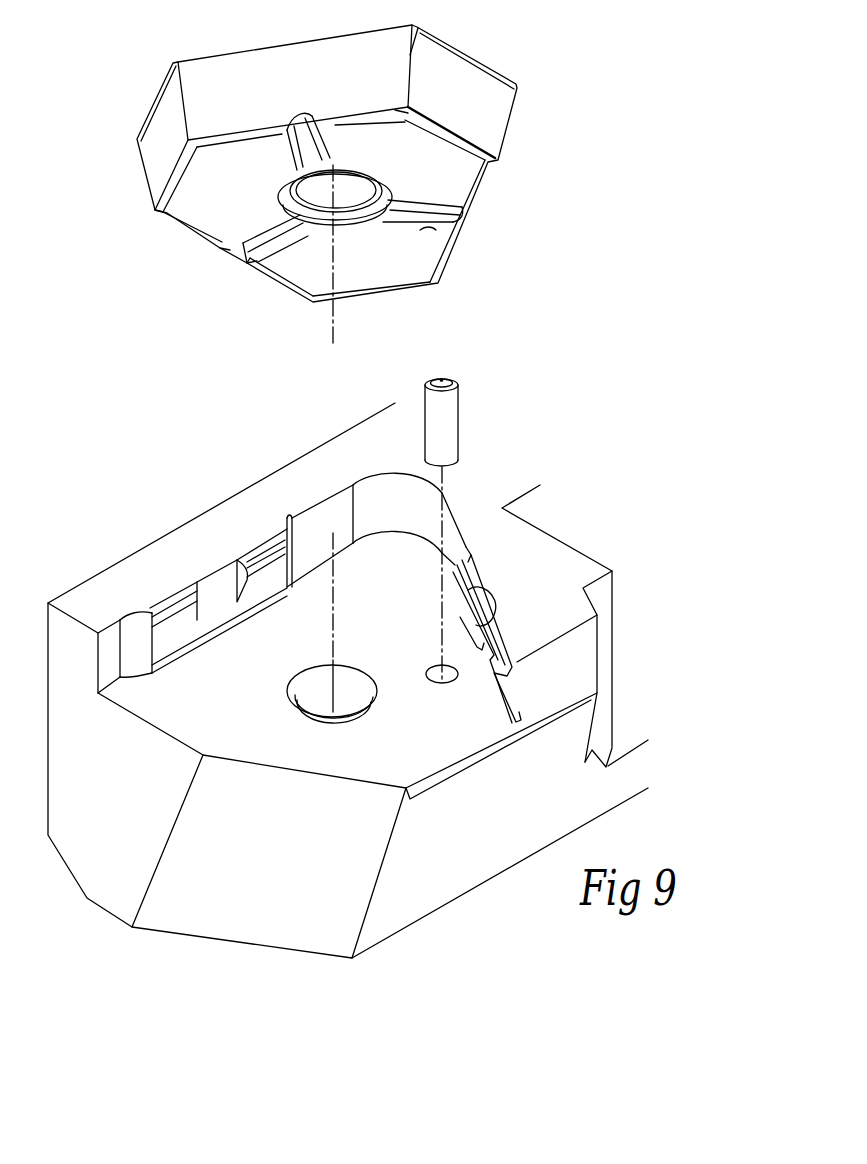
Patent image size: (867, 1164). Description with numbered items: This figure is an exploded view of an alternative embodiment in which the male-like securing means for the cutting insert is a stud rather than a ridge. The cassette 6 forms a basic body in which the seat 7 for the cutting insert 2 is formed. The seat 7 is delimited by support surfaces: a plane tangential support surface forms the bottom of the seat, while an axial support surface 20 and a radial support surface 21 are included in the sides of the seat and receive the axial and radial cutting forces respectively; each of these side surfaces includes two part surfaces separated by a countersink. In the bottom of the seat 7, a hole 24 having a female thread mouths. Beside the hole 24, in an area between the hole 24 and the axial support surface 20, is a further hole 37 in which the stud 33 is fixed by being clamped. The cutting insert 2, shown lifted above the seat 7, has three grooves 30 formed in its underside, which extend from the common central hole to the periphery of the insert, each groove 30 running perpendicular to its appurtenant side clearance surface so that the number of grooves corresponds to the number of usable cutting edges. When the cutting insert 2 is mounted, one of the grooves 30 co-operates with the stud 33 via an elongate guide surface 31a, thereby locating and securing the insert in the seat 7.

The cutting insert 2 is at (530, 124).
The grooves 30 is at (342, 143).
The elongate guide surface 31a is at (427, 226).
The cassette 6 is at (435, 935).
The seat 7 is at (392, 503).
The radial support surface 21 is at (261, 561).
The axial support surface 20 is at (462, 574).
The stud 33 is at (452, 420).
The hole 24 is at (313, 683).
The hole 37 is at (434, 673).